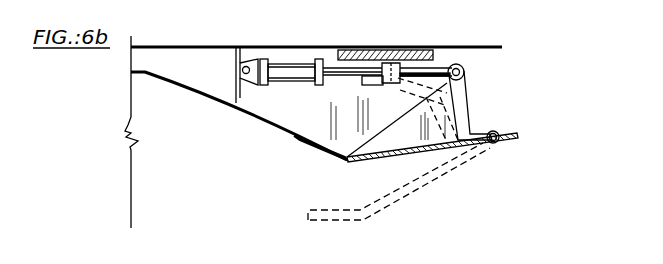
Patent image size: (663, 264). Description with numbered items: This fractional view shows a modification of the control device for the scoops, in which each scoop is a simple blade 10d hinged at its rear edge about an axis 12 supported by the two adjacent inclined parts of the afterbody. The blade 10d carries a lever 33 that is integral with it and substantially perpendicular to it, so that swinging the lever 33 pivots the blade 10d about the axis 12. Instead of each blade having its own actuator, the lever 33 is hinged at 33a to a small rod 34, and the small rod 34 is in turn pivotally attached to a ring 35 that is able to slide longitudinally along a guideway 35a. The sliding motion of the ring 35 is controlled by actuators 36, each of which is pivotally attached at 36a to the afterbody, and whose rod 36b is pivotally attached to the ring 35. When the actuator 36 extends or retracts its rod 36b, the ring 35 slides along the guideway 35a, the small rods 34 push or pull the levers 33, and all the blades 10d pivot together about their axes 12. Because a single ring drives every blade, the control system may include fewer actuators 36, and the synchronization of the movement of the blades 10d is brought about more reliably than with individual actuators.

The scoop blade 10d is at (350, 163).
The hinge axis 12 is at (505, 128).
The lever 33 is at (470, 97).
The hinge point of lever to small rod 33a is at (462, 69).
The small rod 34 is at (460, 64).
The ring 35 is at (390, 50).
The guideway 35a is at (405, 62).
The actuator 36 is at (284, 66).
The actuator pivot attachment 36a is at (243, 66).
The actuator rod 36b is at (333, 68).